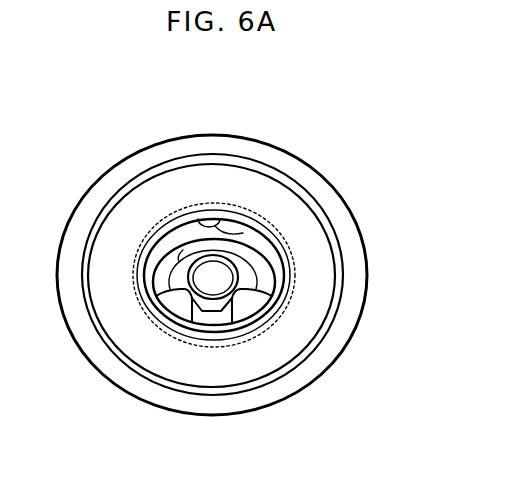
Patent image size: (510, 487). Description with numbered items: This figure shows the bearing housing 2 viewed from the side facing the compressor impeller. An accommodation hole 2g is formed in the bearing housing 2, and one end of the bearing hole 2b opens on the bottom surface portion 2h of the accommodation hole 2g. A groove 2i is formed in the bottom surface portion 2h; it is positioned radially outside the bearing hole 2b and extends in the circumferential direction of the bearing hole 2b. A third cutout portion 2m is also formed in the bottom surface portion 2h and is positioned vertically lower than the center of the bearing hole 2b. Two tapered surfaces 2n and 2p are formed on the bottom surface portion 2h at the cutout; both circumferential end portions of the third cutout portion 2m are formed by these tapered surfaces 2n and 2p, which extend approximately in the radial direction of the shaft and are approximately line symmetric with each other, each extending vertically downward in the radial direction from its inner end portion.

The bearing housing 2 is at (188, 135).
The accommodation hole 2g is at (218, 228).
The bottom surface portion 2h is at (248, 232).
The bearing hole 2b is at (217, 258).
The groove 2i is at (179, 262).
The tapered surface 2p is at (167, 320).
The tapered surface 2n is at (234, 304).
The third cutout portion 2m is at (194, 316).